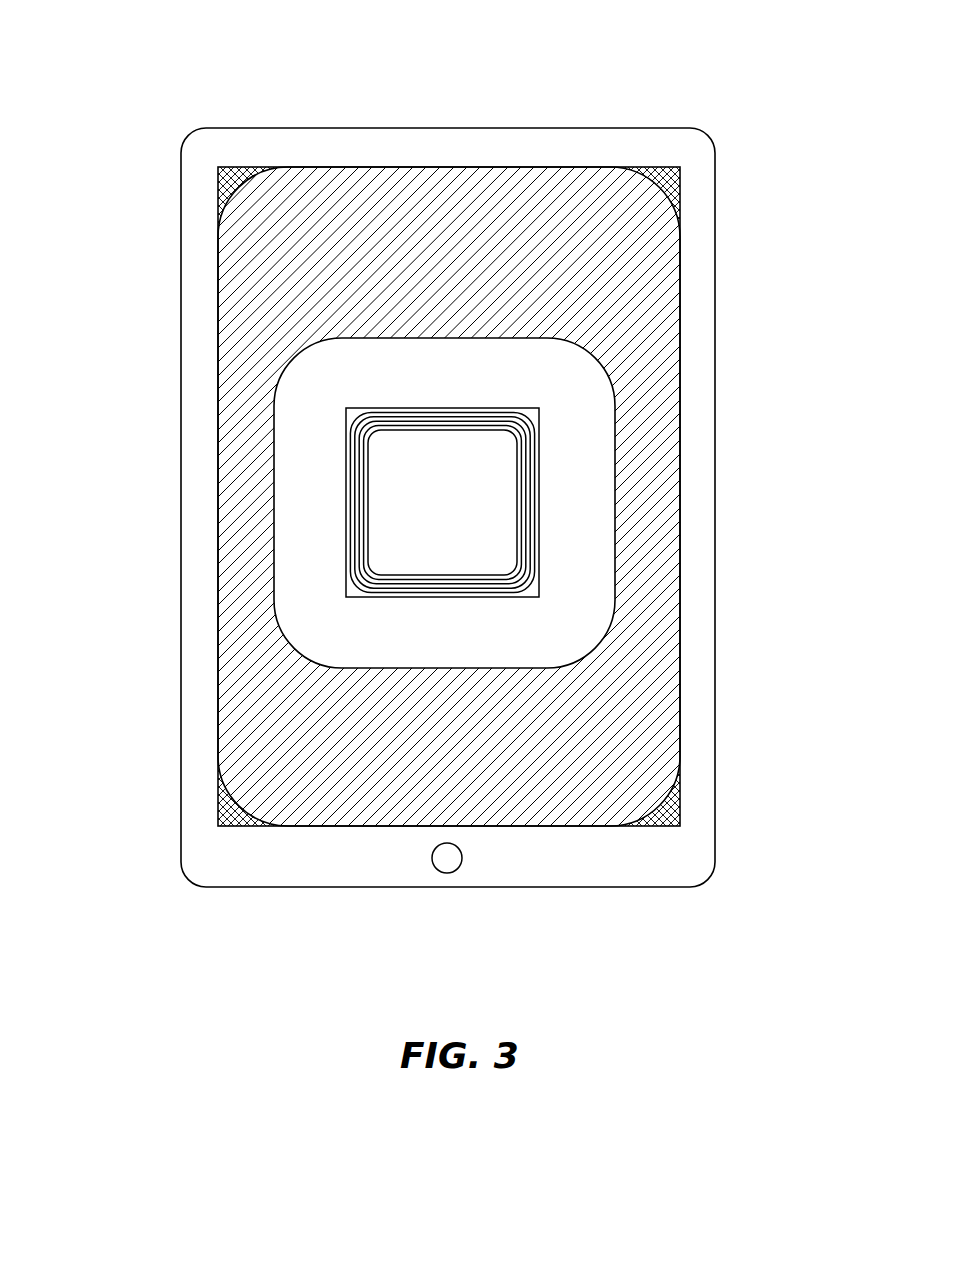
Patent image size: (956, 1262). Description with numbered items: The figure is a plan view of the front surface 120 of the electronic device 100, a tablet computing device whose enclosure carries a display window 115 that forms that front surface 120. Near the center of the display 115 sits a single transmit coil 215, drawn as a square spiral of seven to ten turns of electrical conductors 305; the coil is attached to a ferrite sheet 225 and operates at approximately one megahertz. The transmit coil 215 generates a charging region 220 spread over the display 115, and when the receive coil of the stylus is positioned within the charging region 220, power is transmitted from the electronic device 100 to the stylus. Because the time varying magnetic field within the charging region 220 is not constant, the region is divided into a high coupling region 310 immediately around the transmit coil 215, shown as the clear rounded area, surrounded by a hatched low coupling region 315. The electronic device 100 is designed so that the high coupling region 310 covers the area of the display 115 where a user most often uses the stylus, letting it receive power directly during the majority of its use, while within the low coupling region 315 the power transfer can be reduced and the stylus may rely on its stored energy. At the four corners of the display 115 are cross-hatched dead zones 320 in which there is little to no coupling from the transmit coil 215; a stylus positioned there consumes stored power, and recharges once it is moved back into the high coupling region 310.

The electronic device 100 is at (141, 83).
The display window 115 is at (218, 333).
The front surface 120 is at (403, 202).
The transmit coil 215 is at (528, 453).
The charging region 220 is at (672, 207).
The ferrite sheet 225 is at (540, 408).
The electrical conductors 305 is at (540, 596).
The high coupling region 310 is at (478, 372).
The low coupling region 315 is at (603, 217).
The dead zones 320 is at (233, 190).